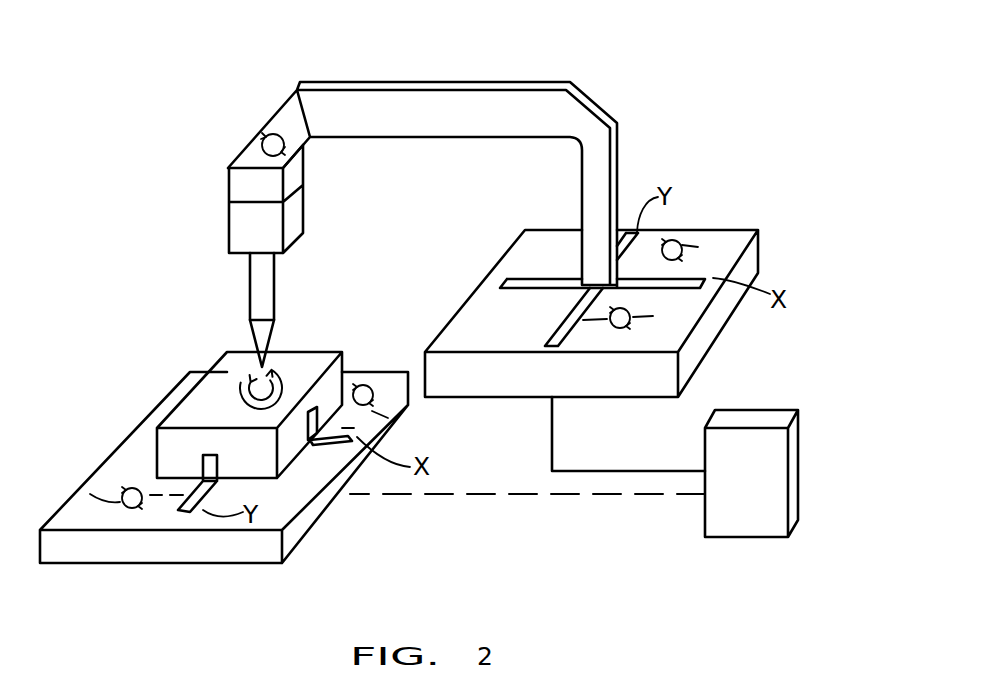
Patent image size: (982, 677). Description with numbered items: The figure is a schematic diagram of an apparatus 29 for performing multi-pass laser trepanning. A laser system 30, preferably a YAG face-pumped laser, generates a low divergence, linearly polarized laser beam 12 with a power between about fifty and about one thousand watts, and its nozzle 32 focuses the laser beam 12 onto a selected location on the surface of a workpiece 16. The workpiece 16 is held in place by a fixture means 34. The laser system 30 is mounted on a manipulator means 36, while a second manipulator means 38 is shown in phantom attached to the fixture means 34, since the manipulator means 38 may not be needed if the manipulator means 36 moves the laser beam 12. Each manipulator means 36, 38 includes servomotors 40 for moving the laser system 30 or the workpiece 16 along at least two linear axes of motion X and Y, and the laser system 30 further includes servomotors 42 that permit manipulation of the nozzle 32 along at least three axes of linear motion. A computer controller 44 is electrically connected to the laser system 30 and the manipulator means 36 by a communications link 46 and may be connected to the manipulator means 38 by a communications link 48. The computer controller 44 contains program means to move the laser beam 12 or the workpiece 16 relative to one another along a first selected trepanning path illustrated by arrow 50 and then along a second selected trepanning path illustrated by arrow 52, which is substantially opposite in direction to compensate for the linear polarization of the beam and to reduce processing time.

The laser beam 12 is at (272, 367).
The workpiece 16 is at (165, 412).
The apparatus 29 is at (472, 72).
The laser system 30 is at (363, 82).
The nozzle 32 is at (247, 293).
The fixture means 34 is at (220, 461).
The manipulator means 36 is at (750, 227).
The manipulator means 38 is at (102, 565).
The servomotors 40 is at (80, 487).
The servomotors 42 is at (262, 148).
The computer controller 44 is at (798, 470).
The communications link 46 is at (552, 433).
The communications link 48 is at (512, 497).
The arrow 50 is at (275, 372).
The arrow 52 is at (240, 397).